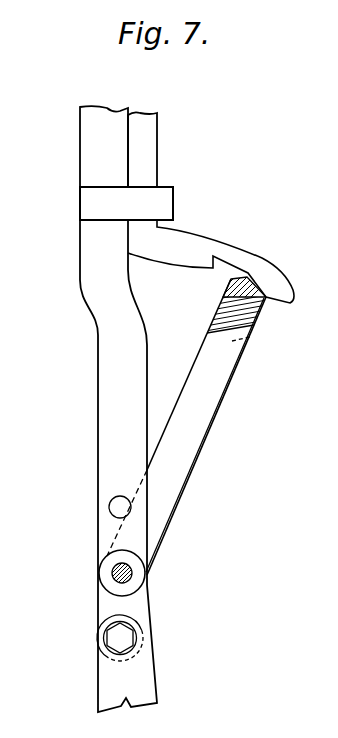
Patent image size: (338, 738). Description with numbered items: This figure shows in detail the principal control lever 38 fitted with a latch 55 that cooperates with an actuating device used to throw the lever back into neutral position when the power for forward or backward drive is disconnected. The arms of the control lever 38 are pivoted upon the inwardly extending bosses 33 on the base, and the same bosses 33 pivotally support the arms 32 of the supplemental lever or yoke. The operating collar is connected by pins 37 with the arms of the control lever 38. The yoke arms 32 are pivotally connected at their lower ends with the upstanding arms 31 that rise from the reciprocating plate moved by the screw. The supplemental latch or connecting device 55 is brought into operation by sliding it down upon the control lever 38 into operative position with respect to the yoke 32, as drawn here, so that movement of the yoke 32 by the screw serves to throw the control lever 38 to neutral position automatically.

The principal control lever 38 is at (80, 253).
The latch 55 is at (193, 242).
The arms of the yoke 32 is at (262, 303).
The pins 37 is at (117, 503).
The bosses 33 is at (128, 576).
The upstanding arms 31 is at (143, 675).